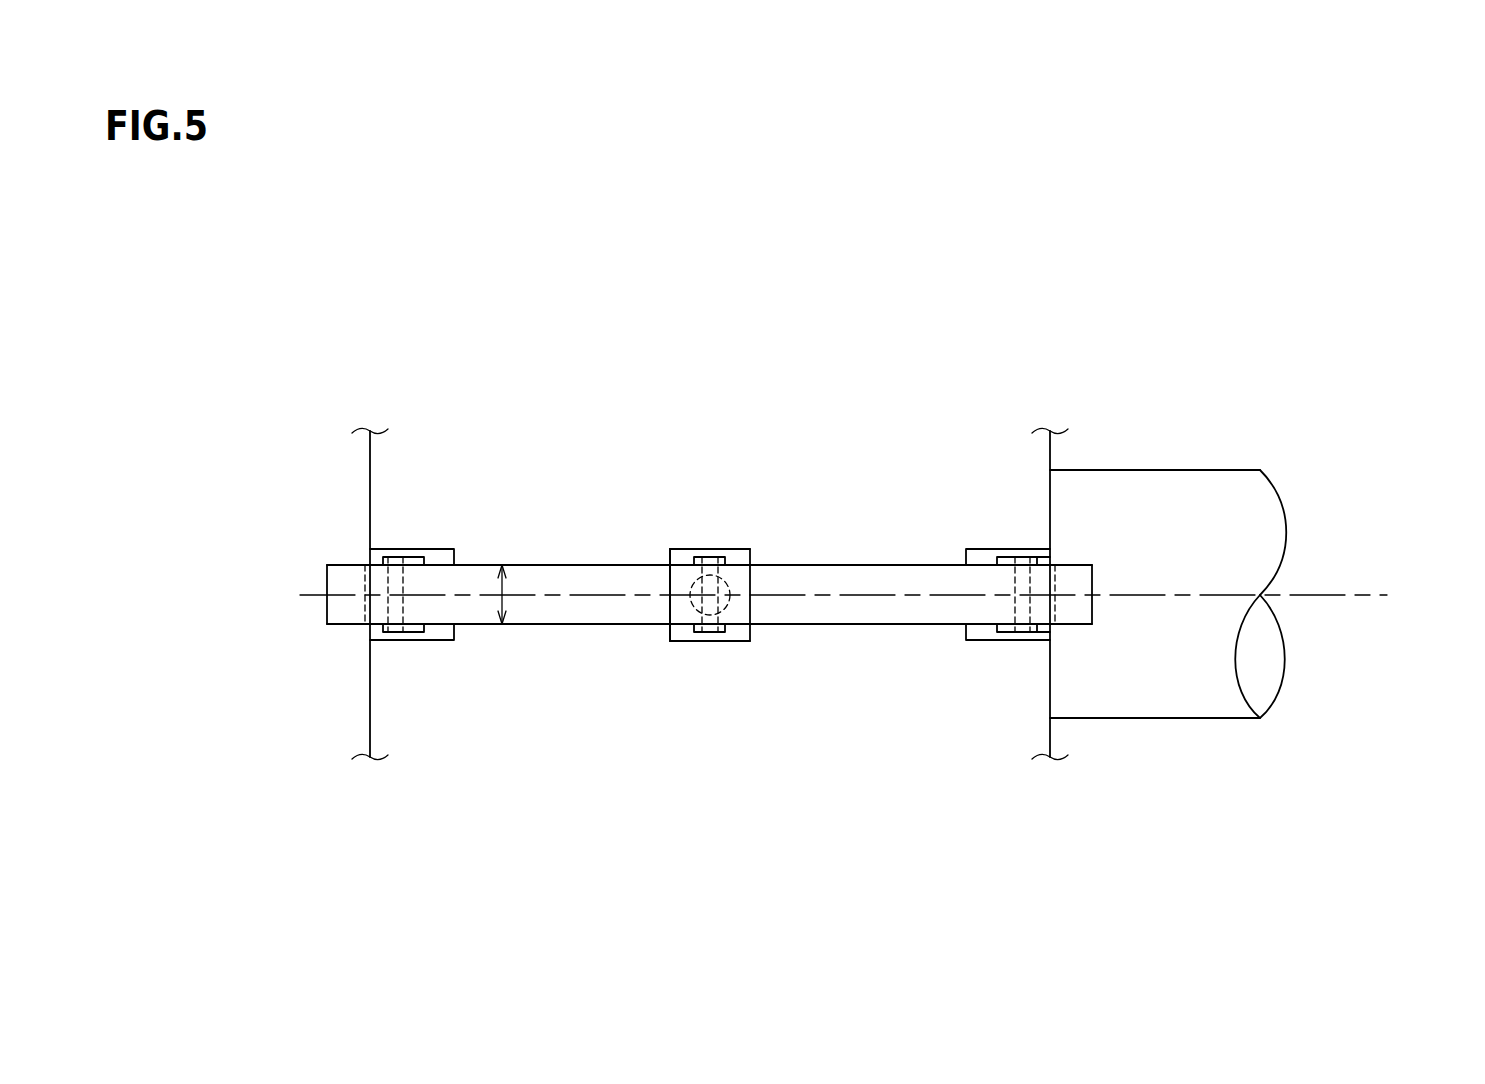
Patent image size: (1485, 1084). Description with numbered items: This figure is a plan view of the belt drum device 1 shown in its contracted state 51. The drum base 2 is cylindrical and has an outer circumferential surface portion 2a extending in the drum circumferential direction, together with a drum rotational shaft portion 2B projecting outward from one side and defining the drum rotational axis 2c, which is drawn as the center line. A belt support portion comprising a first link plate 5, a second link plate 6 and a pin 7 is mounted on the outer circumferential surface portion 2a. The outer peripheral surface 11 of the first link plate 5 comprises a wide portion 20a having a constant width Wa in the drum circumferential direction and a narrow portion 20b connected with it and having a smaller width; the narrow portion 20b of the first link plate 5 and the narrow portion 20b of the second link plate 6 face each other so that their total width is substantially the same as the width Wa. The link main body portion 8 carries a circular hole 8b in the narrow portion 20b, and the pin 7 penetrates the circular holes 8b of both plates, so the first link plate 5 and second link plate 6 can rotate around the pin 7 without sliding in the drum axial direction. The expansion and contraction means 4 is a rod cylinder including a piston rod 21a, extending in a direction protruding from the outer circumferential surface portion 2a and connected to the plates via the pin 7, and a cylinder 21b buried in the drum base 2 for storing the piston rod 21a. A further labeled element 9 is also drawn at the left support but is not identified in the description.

The device 1 is at (943, 293).
The drum base 2 is at (890, 515).
The outer circumferential surface portion 2a is at (890, 515).
The drum rotational shaft portion 2B is at (1165, 525).
The drum rotational axis 2c is at (1365, 595).
The expansion and contraction means 4 is at (660, 640).
The first link plate 5 is at (563, 610).
The second link plate 6 is at (930, 612).
The pin 7 is at (708, 633).
The link main body portion 8 is at (437, 583).
The circular hole 8b is at (708, 560).
The support plate 9 is at (412, 549).
The outer peripheral surface 11 is at (541, 583).
The wide portion 20a is at (608, 585).
The narrow portion 20b is at (687, 577).
The piston rod 21a is at (732, 590).
The cylinder 21b is at (750, 633).
The contracted state 51 is at (508, 378).
The width Wa is at (498, 595).